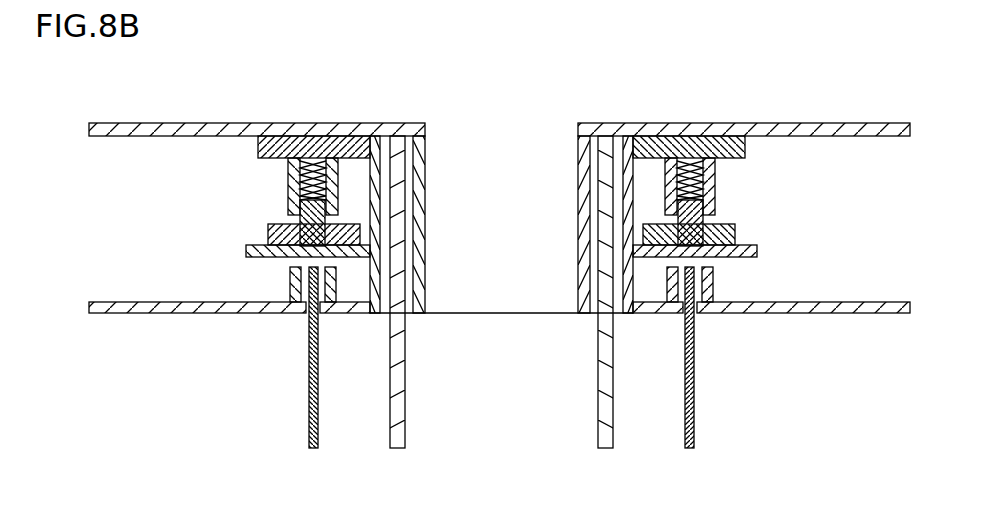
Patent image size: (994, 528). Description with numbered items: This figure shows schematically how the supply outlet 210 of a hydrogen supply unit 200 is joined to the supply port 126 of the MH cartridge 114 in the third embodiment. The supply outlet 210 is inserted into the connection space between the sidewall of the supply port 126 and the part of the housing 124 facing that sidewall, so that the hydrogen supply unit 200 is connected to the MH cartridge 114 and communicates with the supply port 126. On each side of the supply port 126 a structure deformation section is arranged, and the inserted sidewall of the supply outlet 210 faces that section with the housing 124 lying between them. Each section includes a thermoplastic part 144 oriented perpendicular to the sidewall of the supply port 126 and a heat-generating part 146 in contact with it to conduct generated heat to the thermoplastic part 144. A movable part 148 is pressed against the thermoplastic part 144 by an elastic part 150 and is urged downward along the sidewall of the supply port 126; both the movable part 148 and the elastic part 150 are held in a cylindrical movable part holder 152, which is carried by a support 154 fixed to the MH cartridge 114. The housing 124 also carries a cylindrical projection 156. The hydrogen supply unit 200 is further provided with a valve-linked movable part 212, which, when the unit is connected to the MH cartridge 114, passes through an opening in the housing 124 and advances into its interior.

The MH cartridge 114 is at (734, 123).
The housing 124 is at (810, 314).
The supply port 126 is at (510, 218).
The thermoplastic part 144 is at (757, 262).
The heat-generating part 146 is at (735, 237).
The movable part 148 is at (704, 218).
The elastic part 150 is at (714, 180).
The movable part holder 152 is at (665, 173).
The support 154 is at (745, 147).
The cylindrical projection 156 is at (713, 280).
The hydrogen supply unit 200 is at (613, 426).
The supply outlet 210 is at (492, 383).
The valve-linked movable part 212 is at (693, 426).